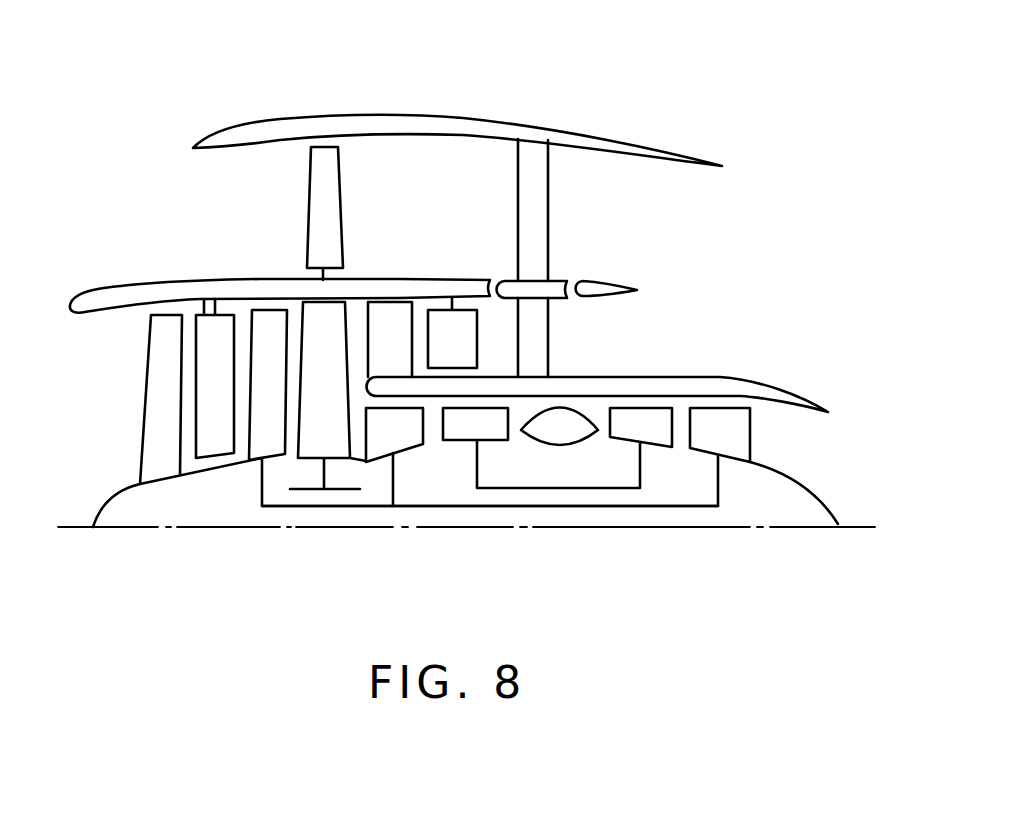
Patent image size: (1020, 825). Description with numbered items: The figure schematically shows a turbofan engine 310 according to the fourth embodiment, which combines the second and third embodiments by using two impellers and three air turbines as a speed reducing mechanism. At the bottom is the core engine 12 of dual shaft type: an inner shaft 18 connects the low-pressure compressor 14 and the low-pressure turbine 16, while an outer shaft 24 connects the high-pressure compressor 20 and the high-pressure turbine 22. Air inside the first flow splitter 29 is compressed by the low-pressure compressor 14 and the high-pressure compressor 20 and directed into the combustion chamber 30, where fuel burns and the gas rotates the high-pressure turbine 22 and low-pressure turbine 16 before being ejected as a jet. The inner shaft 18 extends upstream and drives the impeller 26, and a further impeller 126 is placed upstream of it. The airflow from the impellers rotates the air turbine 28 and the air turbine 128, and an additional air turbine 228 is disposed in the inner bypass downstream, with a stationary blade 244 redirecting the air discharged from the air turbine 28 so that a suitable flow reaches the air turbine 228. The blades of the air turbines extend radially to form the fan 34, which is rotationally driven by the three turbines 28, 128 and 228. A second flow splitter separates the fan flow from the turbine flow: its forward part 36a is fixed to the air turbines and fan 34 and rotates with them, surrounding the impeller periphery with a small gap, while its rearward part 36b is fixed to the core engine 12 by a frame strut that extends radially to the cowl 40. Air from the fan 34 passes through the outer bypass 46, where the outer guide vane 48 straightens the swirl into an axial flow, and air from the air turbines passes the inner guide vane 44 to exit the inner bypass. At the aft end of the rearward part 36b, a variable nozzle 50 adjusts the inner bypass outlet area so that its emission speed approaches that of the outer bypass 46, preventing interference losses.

The turbofan engine 310 is at (880, 150).
The cowl 40 is at (423, 117).
The outer guide vane 48 is at (545, 222).
The outer bypass 46 is at (457, 198).
The fan 34 is at (313, 185).
The forward part of the second flow splitter 36a is at (163, 283).
The rearward part of the second flow splitter 36b is at (560, 281).
The variable nozzle 50 is at (607, 283).
The inner guide vane 44 is at (545, 325).
The first flow splitter 29 is at (650, 377).
The stationary blade 244 is at (385, 312).
The air turbine 228 is at (474, 357).
The air turbine 28 is at (327, 323).
The impeller 26 is at (263, 310).
The air turbine 128 is at (204, 300).
The impeller 126 is at (150, 388).
The core engine 12 is at (753, 376).
The low-pressure compressor 14 is at (406, 442).
The high-pressure compressor 20 is at (475, 440).
The combustion chamber 30 is at (580, 433).
The high-pressure turbine 22 is at (653, 433).
The low-pressure turbine 16 is at (743, 432).
The outer shaft 24 is at (553, 484).
The inner shaft 18 is at (636, 507).